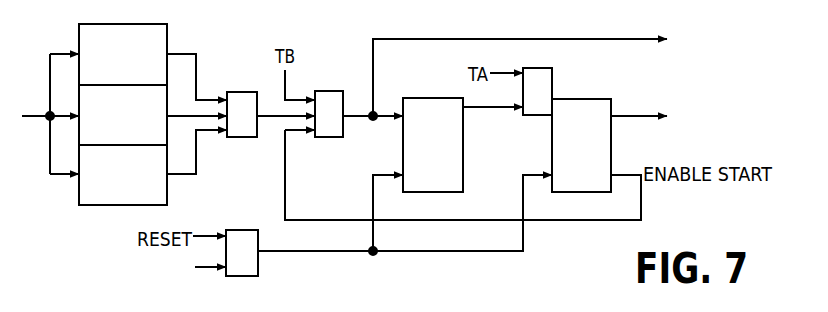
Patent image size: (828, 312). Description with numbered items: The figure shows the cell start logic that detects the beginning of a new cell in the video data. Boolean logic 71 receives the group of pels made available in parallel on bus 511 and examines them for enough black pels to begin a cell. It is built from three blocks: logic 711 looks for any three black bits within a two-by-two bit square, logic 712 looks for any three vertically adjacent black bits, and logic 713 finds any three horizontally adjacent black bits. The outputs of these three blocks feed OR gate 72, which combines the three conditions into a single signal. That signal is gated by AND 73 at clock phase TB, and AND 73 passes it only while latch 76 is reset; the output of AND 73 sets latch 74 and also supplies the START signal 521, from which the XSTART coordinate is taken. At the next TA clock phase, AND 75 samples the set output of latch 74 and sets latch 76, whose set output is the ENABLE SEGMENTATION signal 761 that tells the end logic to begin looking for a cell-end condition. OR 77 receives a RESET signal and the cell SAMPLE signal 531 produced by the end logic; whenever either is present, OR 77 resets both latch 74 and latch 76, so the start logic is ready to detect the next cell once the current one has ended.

The Boolean logic 71 is at (95, 118).
The logic 711 is at (79, 40).
The logic 712 is at (79, 85).
The logic 713 is at (80, 189).
The bus 511 is at (47, 110).
The OR gate 72 is at (241, 91).
The AND 73 is at (334, 91).
The latch 74 is at (420, 98).
The AND 75 is at (541, 116).
The latch 76 is at (612, 140).
The ENABLE SEGMENTATION signal 761 is at (625, 113).
The START signal 521 is at (600, 39).
The OR 77 is at (242, 229).
The SAMPLE signal 531 is at (199, 270).